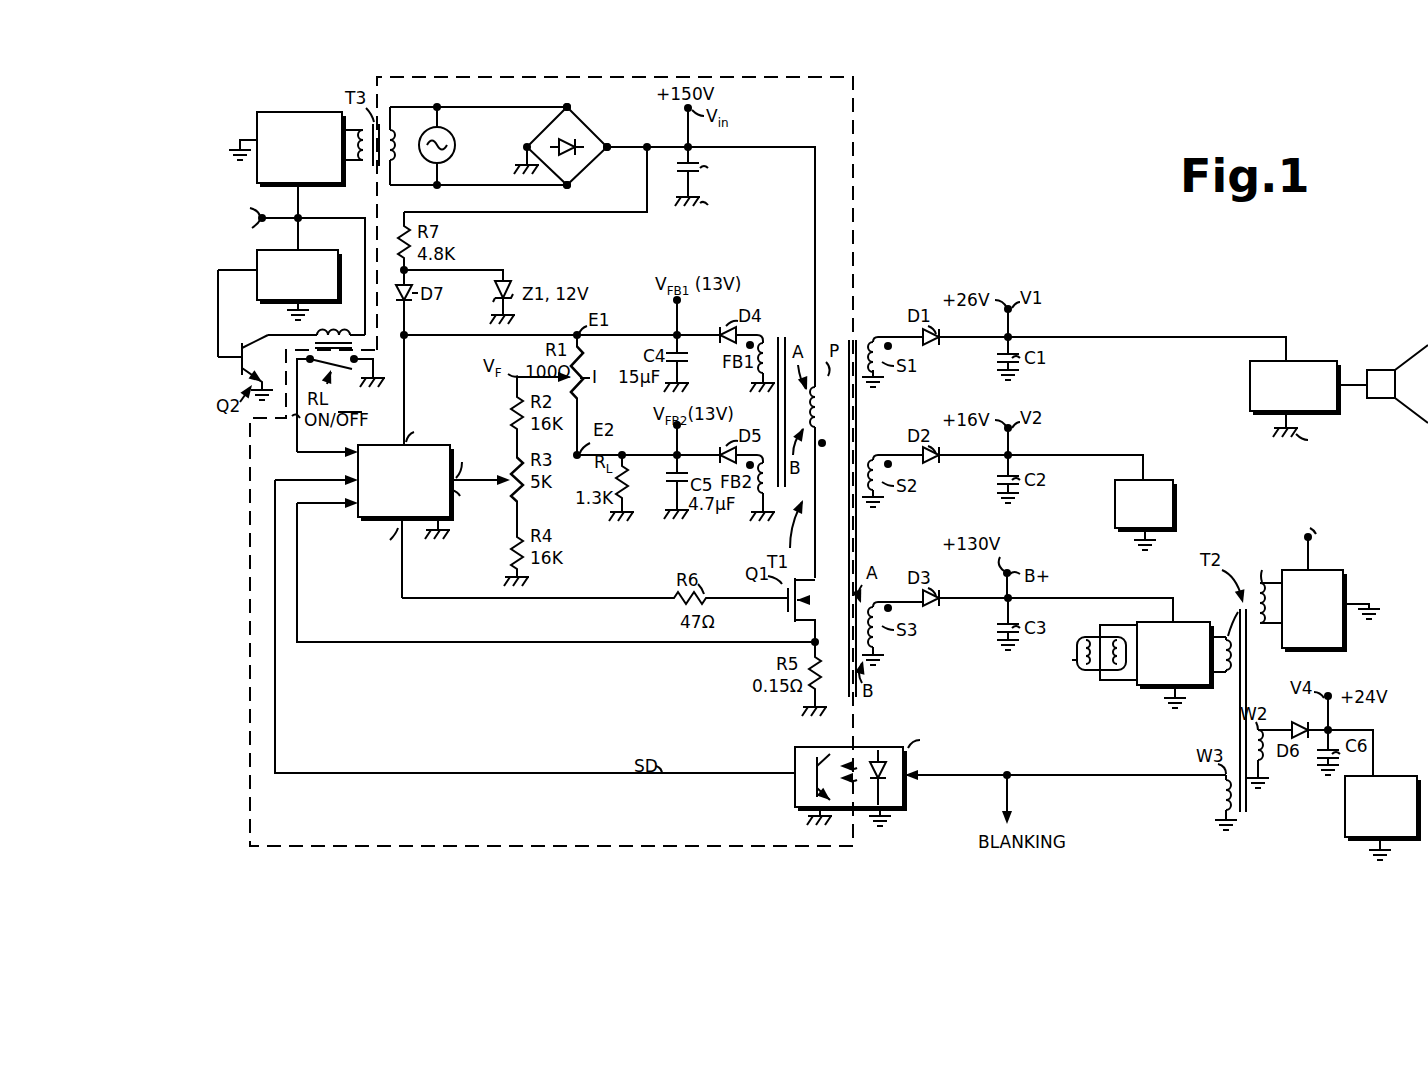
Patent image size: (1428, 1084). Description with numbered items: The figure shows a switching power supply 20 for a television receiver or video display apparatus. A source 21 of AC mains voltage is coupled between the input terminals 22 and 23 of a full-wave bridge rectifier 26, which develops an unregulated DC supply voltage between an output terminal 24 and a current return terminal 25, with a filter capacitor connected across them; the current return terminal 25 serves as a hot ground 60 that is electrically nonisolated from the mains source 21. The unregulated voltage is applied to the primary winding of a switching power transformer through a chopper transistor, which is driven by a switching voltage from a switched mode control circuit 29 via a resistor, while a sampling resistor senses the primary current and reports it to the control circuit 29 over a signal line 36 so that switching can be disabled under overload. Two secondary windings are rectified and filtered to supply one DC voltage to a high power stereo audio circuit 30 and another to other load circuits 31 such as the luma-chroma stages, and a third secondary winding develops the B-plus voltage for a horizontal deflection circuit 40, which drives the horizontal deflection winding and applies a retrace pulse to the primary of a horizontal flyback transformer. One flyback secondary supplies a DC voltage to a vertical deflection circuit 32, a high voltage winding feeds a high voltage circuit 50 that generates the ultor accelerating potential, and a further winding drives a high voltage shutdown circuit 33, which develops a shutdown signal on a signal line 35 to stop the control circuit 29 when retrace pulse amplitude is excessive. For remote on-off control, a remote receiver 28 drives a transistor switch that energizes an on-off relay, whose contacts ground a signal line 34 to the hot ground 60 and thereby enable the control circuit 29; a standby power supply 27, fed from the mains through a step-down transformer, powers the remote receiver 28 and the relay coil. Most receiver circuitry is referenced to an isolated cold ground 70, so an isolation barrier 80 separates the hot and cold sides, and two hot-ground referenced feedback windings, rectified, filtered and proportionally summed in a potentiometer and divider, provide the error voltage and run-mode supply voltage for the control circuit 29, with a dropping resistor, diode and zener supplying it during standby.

The switching power supply 20 is at (972, 260).
The source of AC mains supply voltage 21 is at (426, 126).
The input terminal 22 is at (564, 106).
The input terminal 23 is at (569, 187).
The output terminal 24 is at (607, 150).
The current return terminal 25 is at (516, 154).
The full-wave bridge rectifier 26 is at (596, 122).
The standby power supply 27 is at (338, 114).
The remote receiver 28 is at (348, 246).
The switched mode control circuit 29 is at (452, 515).
The high power stereo audio circuit 30 is at (1348, 355).
The load circuits 31 is at (1176, 480).
The vertical deflection circuit 32 is at (1412, 778).
The high voltage shutdown circuit 33 is at (905, 822).
The signal line 34 is at (296, 452).
The signal line 35 is at (743, 780).
The signal line 36 is at (683, 648).
The horizontal deflection circuit 40 is at (1204, 622).
The high voltage circuit 50 is at (1346, 576).
The hot ground 60 is at (688, 206).
The cold ground 70 is at (1288, 436).
The isolation barrier 80 is at (858, 100).